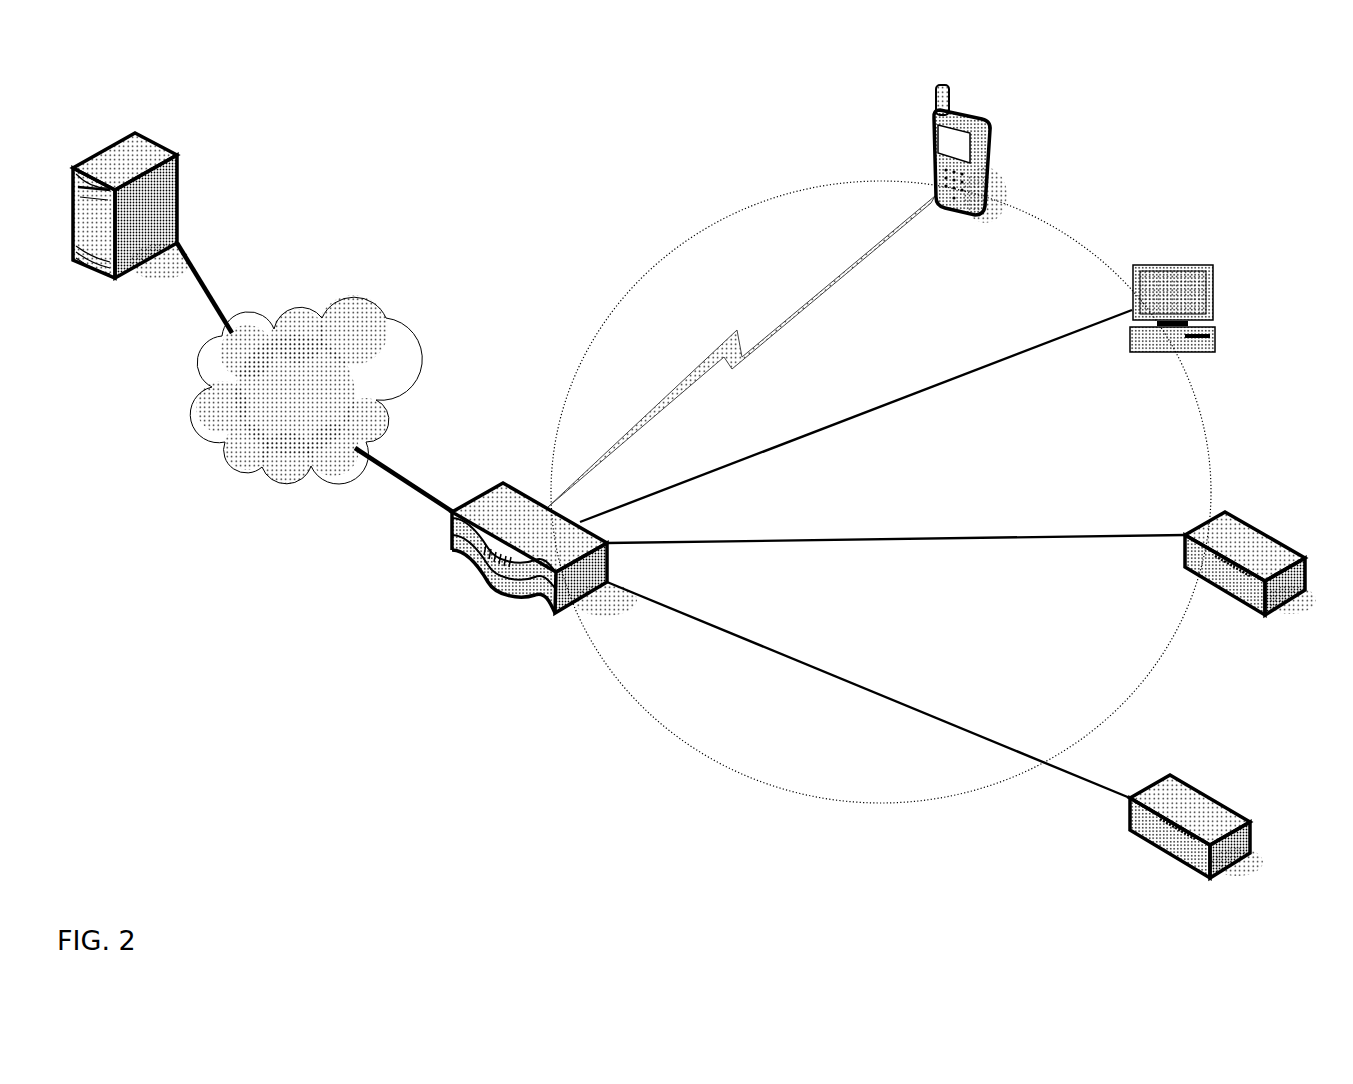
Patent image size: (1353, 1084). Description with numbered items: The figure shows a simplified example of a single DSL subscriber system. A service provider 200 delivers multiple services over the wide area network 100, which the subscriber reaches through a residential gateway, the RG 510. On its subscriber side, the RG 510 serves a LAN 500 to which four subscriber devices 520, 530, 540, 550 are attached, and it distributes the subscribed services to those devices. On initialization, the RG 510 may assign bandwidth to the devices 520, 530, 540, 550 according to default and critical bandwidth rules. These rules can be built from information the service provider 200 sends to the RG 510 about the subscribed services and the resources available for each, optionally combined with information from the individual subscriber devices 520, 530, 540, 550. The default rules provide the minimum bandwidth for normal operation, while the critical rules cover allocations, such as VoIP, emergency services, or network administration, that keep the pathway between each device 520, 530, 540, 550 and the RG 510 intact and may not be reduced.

The wide area network 100 is at (306, 389).
The service provider 200 is at (131, 193).
The LAN 500 is at (881, 492).
The RG 510 is at (526, 566).
The subscriber device 520 is at (986, 154).
The subscriber device 530 is at (1203, 293).
The subscriber device 540 is at (1252, 569).
The subscriber device 550 is at (1208, 828).